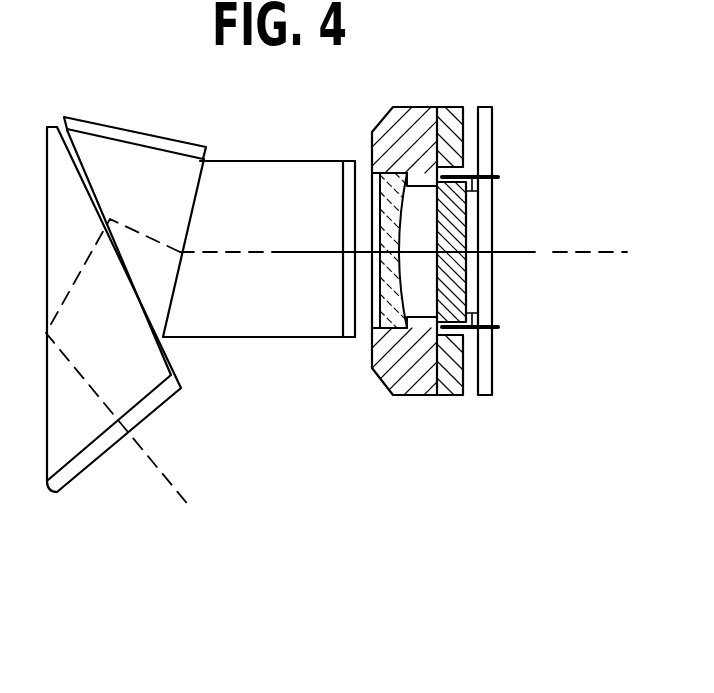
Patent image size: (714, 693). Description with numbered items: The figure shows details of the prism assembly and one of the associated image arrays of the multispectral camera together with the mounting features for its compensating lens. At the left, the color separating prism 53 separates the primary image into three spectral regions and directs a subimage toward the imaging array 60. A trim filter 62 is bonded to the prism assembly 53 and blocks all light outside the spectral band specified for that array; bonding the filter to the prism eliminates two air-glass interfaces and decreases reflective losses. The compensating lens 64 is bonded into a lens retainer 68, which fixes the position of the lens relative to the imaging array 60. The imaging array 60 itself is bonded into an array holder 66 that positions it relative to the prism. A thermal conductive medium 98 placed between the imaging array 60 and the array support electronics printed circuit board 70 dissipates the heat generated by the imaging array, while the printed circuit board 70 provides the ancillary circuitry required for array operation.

The color separating prism 53 is at (180, 272).
The trim filter 62 is at (348, 338).
The compensating lens 64 is at (383, 310).
The lens retainer 68 is at (410, 378).
The array holder 66 is at (452, 388).
The imaging array 60 is at (480, 267).
The thermal conductive medium 98 is at (480, 292).
The printed circuit board 70 is at (492, 145).